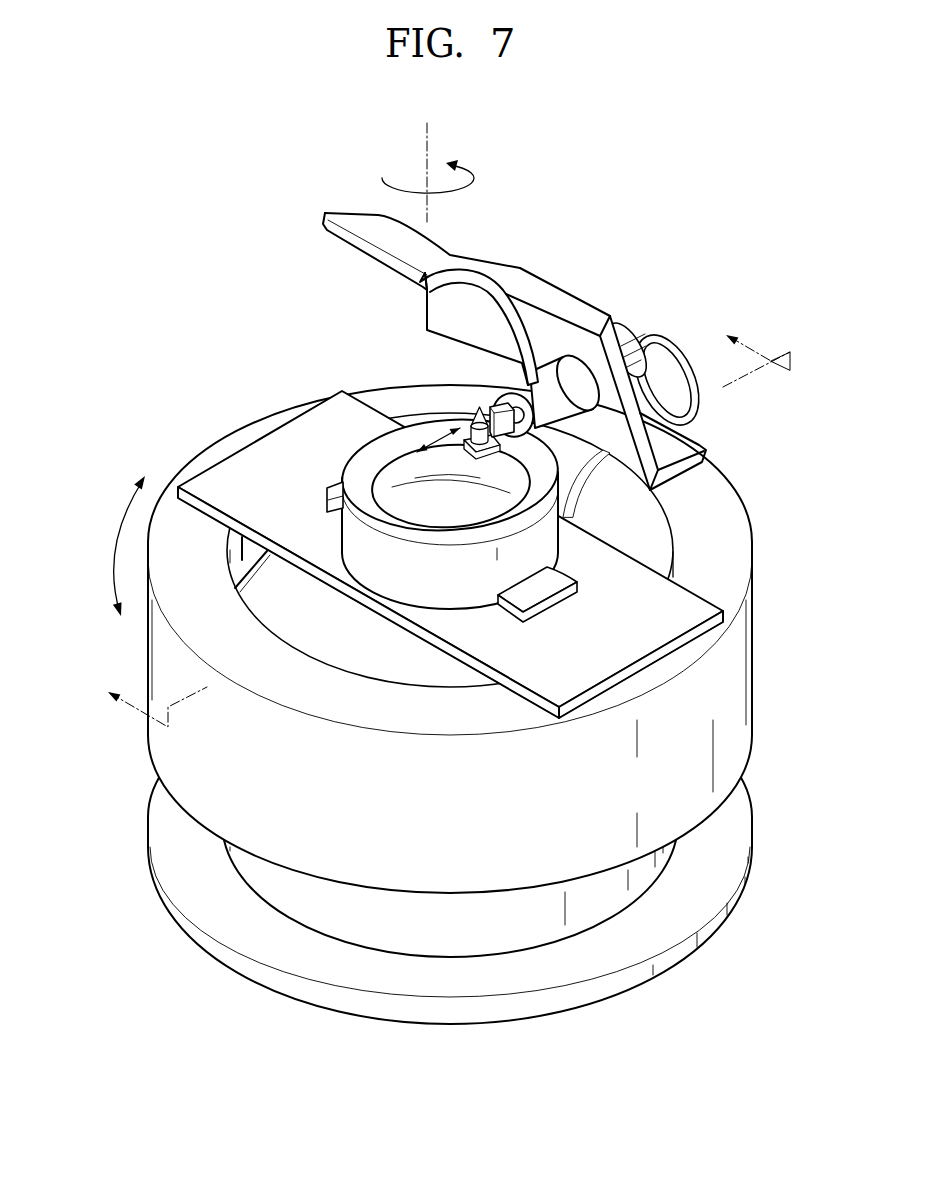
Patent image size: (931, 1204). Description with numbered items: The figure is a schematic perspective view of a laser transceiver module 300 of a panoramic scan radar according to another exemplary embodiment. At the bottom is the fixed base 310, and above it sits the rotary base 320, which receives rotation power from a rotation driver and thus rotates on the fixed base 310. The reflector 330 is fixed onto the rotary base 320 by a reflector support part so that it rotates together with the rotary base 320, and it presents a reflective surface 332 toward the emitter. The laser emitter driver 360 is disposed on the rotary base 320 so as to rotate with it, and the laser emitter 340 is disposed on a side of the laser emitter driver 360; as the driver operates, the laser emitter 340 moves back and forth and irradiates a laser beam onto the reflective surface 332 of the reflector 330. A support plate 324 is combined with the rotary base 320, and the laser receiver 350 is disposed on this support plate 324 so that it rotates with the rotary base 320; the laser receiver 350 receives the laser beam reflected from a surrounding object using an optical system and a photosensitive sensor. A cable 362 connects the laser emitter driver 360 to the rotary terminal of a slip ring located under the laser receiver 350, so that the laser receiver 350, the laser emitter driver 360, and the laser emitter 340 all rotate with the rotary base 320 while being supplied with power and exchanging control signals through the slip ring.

The laser transceiver module 300 is at (462, 570).
The fixed base 310 is at (600, 900).
The rotary base 320 is at (735, 548).
The support plate 324 is at (208, 482).
The reflector 330 is at (345, 213).
The reflective surface 332 is at (540, 287).
The laser emitter 340 is at (463, 438).
The laser receiver 350 is at (353, 473).
The laser emitter driver 360 is at (625, 335).
The cable 362 is at (680, 343).